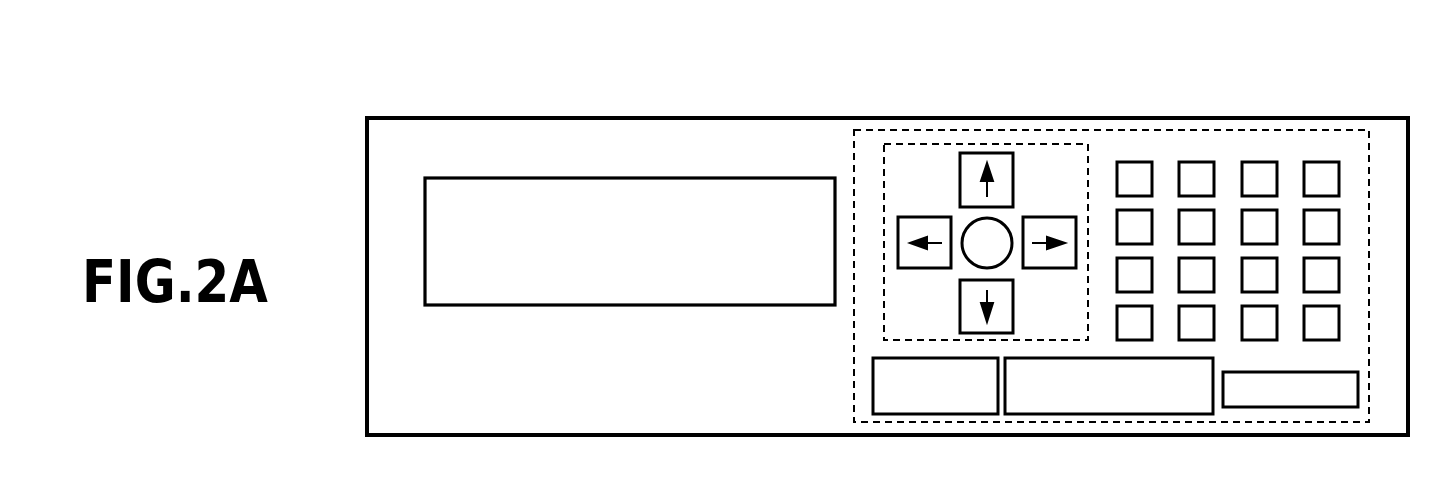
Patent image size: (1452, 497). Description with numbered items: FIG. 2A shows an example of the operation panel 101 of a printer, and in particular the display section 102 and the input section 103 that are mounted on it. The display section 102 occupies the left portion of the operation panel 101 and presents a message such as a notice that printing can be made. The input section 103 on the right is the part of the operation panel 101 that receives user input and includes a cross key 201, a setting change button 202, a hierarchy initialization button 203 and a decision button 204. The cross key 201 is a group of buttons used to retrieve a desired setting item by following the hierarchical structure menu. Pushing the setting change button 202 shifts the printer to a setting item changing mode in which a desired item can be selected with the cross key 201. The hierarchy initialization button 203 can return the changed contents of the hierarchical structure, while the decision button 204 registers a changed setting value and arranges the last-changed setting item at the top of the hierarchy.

The operation panel 101 is at (518, 117).
The display section 102 is at (672, 177).
The input section 103 is at (1083, 130).
The cross key 201 is at (985, 145).
The setting change button 202 is at (935, 415).
The hierarchy initialization button 203 is at (1127, 415).
The decision button 204 is at (1287, 408).